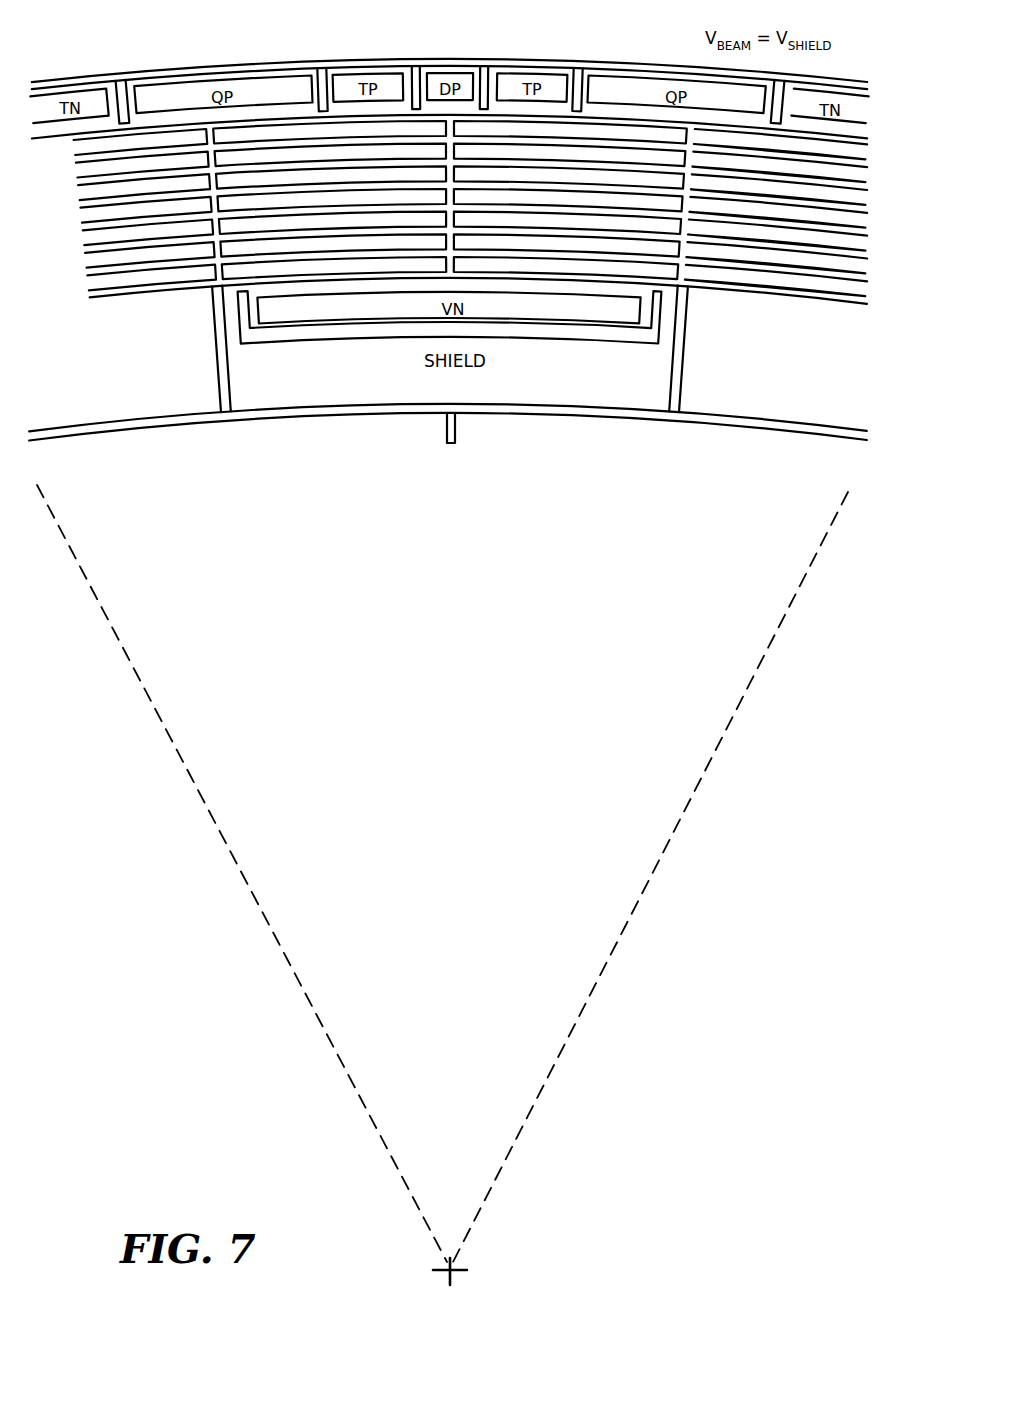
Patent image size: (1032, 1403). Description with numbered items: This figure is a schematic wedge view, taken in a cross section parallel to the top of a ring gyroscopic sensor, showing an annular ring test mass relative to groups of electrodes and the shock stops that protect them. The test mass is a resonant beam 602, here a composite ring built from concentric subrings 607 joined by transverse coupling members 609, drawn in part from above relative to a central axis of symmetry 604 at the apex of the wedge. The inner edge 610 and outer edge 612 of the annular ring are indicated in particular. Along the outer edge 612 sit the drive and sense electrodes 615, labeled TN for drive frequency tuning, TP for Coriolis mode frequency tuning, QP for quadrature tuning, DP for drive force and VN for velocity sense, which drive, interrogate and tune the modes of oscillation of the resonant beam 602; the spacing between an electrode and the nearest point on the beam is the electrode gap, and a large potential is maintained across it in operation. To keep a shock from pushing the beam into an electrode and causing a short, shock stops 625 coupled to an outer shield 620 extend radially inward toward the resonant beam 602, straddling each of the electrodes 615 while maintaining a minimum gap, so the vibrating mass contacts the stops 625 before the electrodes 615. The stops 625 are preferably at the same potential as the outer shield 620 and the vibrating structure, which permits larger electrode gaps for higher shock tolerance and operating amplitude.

The resonant beam 602 is at (71, 137).
The central axis of symmetry 604 is at (452, 1252).
The concentric subrings 607 is at (859, 213).
The transverse coupling members 609 is at (688, 359).
The inner edge 610 is at (133, 299).
The outer edge 612 is at (853, 139).
The drive and sense electrodes 615 is at (861, 111).
The outer shield 620 is at (511, 58).
The shock stops 625 is at (585, 92).